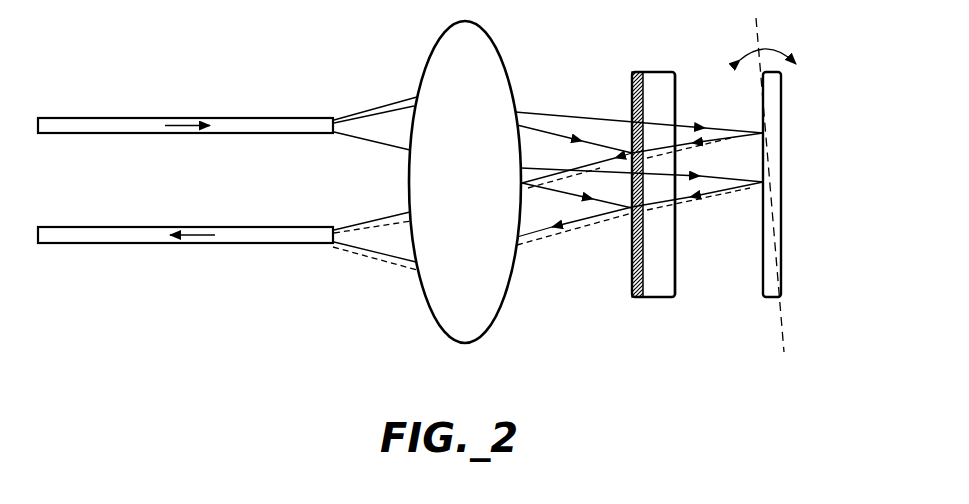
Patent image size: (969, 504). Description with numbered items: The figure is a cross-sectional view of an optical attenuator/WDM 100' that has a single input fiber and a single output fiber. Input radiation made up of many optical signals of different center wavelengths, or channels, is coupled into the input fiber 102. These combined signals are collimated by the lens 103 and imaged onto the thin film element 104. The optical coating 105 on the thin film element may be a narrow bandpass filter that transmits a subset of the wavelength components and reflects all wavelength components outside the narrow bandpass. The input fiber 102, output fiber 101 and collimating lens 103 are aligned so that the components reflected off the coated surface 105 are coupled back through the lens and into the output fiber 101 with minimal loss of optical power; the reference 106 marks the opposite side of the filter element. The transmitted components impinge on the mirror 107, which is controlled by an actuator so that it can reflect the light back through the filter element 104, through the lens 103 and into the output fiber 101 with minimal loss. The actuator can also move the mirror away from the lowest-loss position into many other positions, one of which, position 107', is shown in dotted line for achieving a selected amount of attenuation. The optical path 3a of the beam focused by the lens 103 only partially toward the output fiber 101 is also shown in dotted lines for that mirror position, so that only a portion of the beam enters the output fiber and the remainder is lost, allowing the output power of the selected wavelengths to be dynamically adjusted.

The optical attenuator/WDM 100' is at (177, 368).
The output fiber 101 is at (66, 228).
The input fiber 102 is at (66, 118).
The lens 103 is at (490, 311).
The thin film element 104 is at (662, 278).
The optical coating 105 is at (635, 71).
The filter second surface 106 is at (655, 71).
The mirror 107 is at (808, 184).
The mirror position 107' is at (751, 193).
The optical path of the beam 3a is at (376, 258).